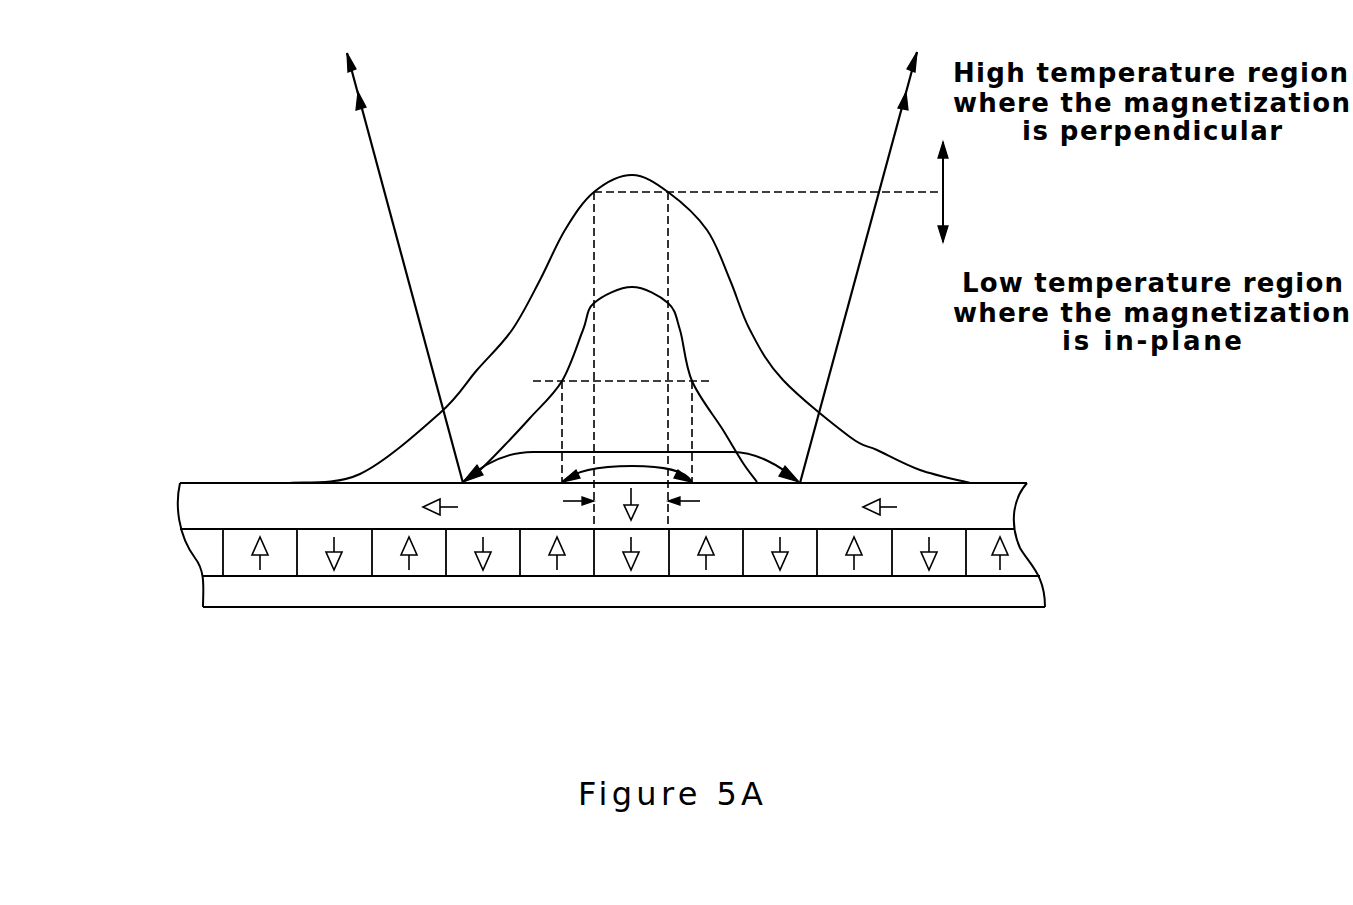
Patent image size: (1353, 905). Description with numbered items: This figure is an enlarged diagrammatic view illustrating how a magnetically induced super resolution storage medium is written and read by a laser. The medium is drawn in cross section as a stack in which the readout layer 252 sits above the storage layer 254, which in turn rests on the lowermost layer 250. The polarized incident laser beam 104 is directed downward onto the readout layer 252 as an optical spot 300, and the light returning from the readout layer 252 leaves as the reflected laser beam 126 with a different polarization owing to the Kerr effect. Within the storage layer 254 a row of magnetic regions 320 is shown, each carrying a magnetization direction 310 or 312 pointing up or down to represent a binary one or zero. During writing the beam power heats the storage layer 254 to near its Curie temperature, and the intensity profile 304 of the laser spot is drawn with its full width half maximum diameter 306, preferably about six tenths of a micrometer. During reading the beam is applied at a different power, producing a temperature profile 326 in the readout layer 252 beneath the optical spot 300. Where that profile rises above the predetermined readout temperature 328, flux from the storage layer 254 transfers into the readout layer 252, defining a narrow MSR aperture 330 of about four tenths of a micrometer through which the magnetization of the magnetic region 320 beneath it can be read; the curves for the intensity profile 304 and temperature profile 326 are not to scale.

The reflected laser beam 126 is at (354, 68).
The incident laser beam 104 is at (362, 106).
The readout temperature 328 is at (668, 192).
The temperature profile 326 is at (877, 450).
The intensity profile 304 is at (683, 347).
The optical spot 300 is at (733, 452).
The full width half maximum diameter 306 is at (623, 467).
The MSR aperture 330 is at (606, 360).
The readout layer 252 is at (1013, 504).
The storage layer 254 is at (1018, 548).
The substrate 250 is at (1037, 591).
The magnetic region 320 is at (543, 565).
The magnetization direction 310 is at (250, 567).
The magnetization direction 312 is at (315, 568).